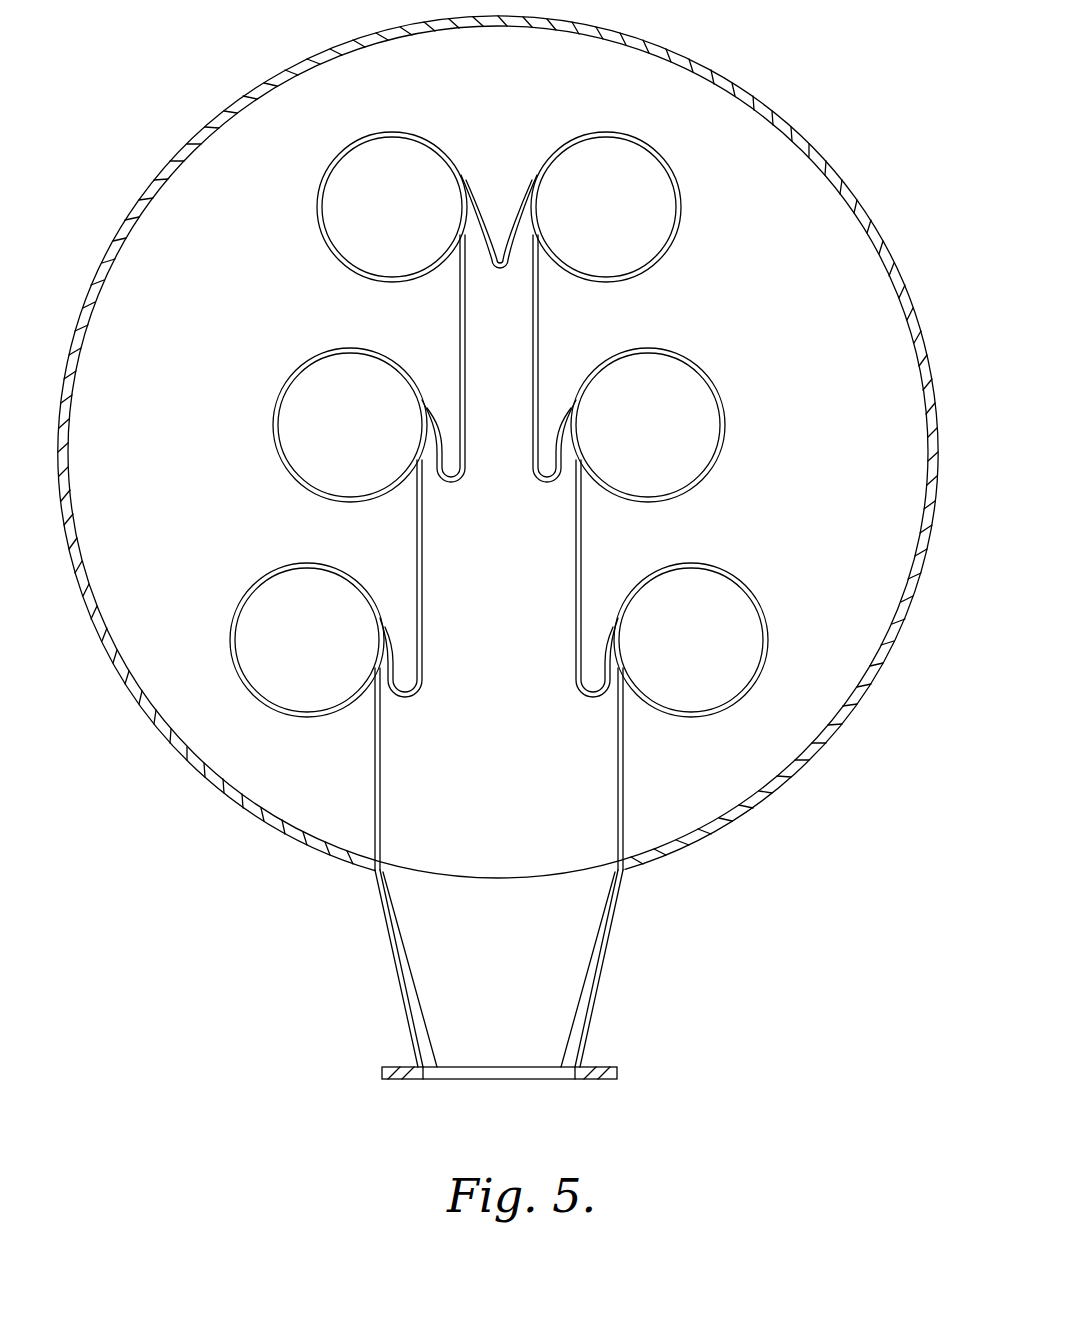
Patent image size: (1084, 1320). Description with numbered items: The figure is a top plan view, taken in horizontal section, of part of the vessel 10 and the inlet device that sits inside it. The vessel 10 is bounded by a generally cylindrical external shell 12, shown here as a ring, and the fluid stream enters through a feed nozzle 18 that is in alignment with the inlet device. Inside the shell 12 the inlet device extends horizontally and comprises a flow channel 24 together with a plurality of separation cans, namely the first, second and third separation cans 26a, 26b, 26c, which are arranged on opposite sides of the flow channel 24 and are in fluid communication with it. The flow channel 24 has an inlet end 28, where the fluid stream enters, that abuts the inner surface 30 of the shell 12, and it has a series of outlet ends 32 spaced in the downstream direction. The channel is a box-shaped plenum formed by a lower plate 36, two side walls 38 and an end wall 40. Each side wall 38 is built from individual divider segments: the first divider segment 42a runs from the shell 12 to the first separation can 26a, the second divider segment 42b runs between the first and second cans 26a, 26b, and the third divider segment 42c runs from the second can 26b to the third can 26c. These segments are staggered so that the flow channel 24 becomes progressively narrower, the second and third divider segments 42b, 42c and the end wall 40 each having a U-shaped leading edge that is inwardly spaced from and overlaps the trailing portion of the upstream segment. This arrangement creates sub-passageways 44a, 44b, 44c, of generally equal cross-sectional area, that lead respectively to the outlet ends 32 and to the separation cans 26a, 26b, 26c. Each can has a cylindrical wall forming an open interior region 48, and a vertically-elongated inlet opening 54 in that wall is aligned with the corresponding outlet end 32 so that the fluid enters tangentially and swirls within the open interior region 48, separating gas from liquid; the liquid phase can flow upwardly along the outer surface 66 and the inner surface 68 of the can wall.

The vessel 10 is at (722, 62).
The external shell 12 is at (792, 128).
The feed nozzle 18 is at (600, 975).
The flow channel 24 is at (498, 772).
The first separation can 26a is at (240, 600).
The second separation can 26b is at (275, 390).
The third separation can 26c is at (316, 207).
The inlet end 28 is at (527, 880).
The inner surface 30 is at (748, 788).
The outlet ends 32 is at (472, 248).
The lower plate 36 is at (425, 848).
The side walls 38 is at (373, 780).
The end wall 40 is at (503, 245).
The first divider segment 42a is at (626, 760).
The second divider segment 42b is at (585, 556).
The third divider segment 42c is at (540, 360).
The first sub-passageway 44a is at (390, 705).
The second sub-passageway 44b is at (437, 490).
The third sub-passageway 44c is at (478, 283).
The open interior region 48 is at (645, 386).
The inlet opening 54 is at (465, 210).
The outer surface 66 is at (760, 602).
The inner surface 68 is at (762, 630).